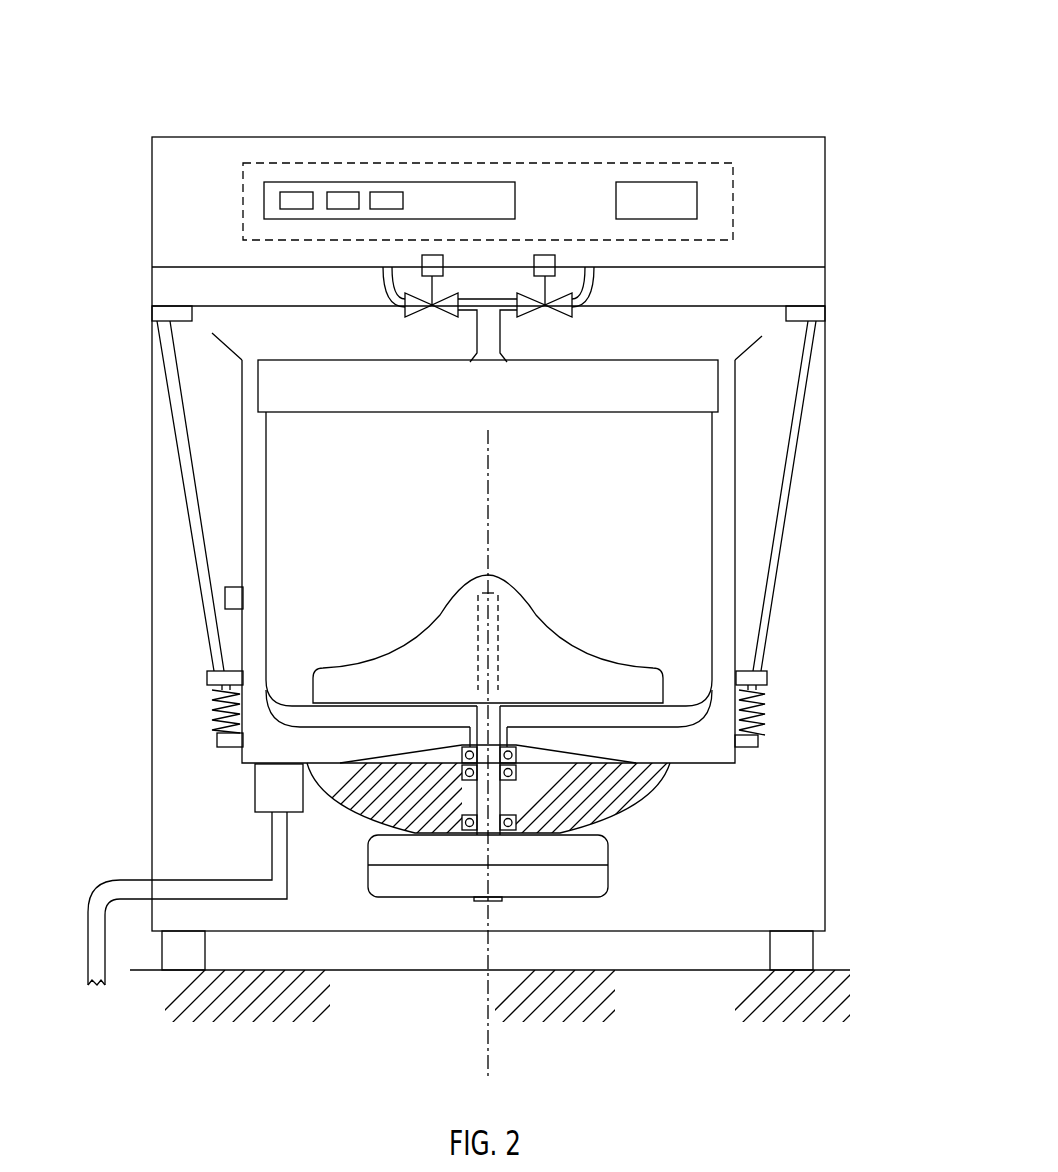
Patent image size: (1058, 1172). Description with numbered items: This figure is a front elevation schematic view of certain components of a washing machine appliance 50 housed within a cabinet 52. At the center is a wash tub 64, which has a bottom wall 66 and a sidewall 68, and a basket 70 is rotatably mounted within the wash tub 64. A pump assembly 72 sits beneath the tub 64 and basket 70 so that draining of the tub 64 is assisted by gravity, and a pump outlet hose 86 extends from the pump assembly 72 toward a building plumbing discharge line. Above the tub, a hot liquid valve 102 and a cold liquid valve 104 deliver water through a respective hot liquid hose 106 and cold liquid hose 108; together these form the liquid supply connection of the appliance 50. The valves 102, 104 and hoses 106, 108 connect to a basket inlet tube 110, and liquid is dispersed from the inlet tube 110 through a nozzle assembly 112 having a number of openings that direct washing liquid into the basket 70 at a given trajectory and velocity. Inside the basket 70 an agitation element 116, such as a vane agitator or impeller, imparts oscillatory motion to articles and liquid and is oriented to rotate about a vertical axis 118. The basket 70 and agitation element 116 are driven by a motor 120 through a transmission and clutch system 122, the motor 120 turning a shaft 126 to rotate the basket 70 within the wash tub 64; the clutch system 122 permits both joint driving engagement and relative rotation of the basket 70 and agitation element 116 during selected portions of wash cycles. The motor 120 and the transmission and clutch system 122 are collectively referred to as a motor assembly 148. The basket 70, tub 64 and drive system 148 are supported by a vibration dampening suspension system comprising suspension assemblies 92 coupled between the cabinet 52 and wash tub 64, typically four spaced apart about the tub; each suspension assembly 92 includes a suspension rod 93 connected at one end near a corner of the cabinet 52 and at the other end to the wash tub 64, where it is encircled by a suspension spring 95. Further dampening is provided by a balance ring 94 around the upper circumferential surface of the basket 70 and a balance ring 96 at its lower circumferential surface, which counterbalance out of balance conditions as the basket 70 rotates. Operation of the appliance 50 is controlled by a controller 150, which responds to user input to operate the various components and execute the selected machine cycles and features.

The washing machine appliance 50 is at (188, 74).
The cabinet 52 is at (826, 493).
The wash tub 64 is at (243, 520).
The bottom wall 66 is at (255, 772).
The sidewall 68 is at (734, 556).
The basket 70 is at (707, 605).
The pump assembly 72 is at (255, 813).
The pump outlet hose 86 is at (88, 935).
The suspension assembly 92 is at (152, 414).
The suspension rod 93 is at (188, 485).
The balance ring 94 is at (306, 382).
The suspension spring 95 is at (210, 710).
The balance ring 96 is at (697, 715).
The hot liquid valve 102 is at (433, 255).
The cold liquid valve 104 is at (545, 255).
The hot liquid hose 106 is at (384, 281).
The cold liquid hose 108 is at (593, 282).
The basket inlet tube 110 is at (502, 362).
The nozzle assembly 112 is at (474, 362).
The agitation element 116 is at (530, 605).
The vertical axis 118 is at (490, 515).
The motor 120 is at (595, 882).
The transmission and clutch system 122 is at (592, 848).
The shaft 126 is at (483, 796).
The motor assembly 148 is at (718, 768).
The controller 150 is at (733, 185).